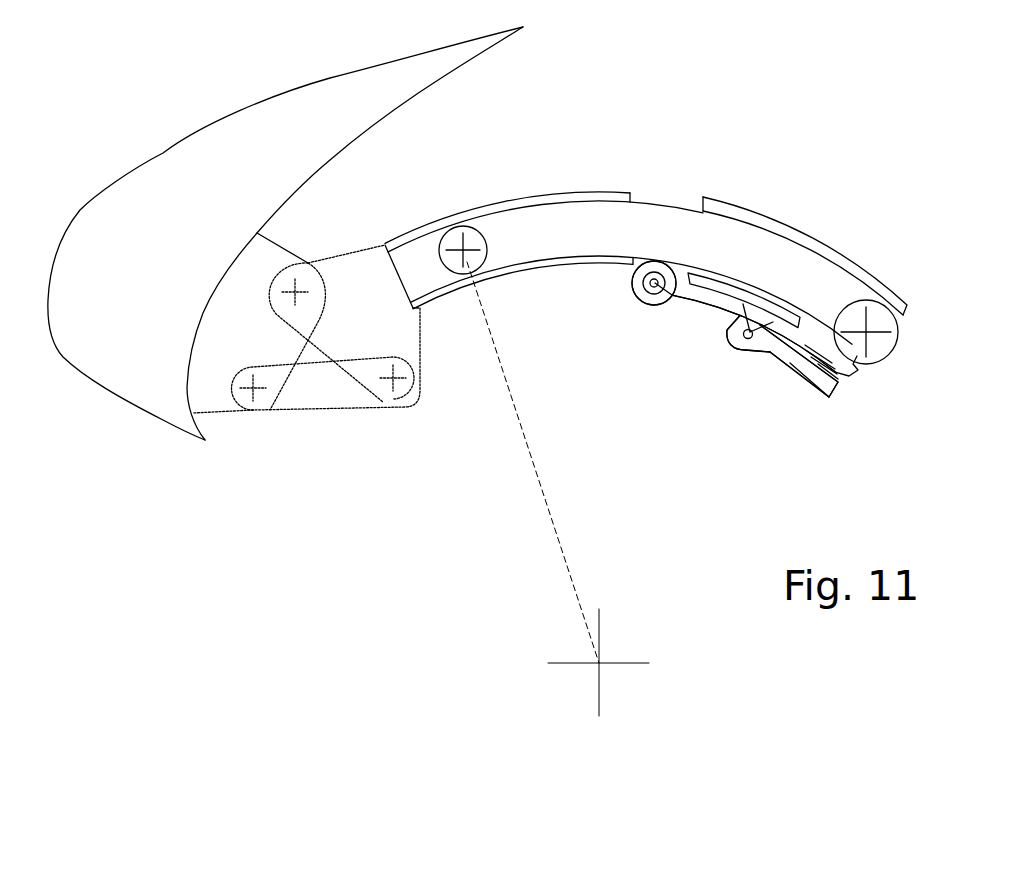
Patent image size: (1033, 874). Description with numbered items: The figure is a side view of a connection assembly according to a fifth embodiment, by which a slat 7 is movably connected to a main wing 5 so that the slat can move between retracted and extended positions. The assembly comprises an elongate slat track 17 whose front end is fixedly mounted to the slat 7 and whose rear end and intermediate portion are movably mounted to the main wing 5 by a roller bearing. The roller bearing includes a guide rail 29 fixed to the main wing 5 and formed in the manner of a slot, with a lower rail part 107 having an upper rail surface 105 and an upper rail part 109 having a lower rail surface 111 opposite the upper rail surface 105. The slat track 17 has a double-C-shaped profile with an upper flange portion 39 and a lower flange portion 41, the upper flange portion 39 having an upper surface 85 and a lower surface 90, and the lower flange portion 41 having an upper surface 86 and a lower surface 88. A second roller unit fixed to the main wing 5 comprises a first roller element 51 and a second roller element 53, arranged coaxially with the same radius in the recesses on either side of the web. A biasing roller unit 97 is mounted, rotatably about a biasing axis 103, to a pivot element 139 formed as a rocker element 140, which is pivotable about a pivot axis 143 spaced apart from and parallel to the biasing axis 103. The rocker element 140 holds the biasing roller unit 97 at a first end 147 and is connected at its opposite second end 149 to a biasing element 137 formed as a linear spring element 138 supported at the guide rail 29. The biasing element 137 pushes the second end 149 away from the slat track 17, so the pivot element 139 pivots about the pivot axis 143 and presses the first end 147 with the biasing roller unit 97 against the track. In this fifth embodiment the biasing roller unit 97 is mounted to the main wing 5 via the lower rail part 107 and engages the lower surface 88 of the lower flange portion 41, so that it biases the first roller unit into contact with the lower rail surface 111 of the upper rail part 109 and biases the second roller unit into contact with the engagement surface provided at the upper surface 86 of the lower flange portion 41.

The main wing 5 is at (624, 460).
The slat 7 is at (161, 274).
The slat track 17 is at (618, 240).
The guide rail 29 is at (791, 305).
The upper flange portion 39 is at (425, 228).
The lower flange portion 41 is at (443, 293).
The first roller element 51 is at (880, 317).
The second roller element 53 is at (478, 238).
The upper surface 85 is at (647, 203).
The upper surface 86 is at (533, 258).
The lower surface 88 is at (610, 263).
The lower surface 90 is at (507, 212).
The biasing roller unit 97 is at (648, 300).
The biasing axis 103 is at (655, 281).
The upper rail surface 105 is at (810, 320).
The lower rail part 107 is at (866, 402).
The upper rail part 109 is at (812, 233).
The lower rail surface 111 is at (778, 230).
The biasing element 137 is at (838, 386).
The linear spring element 138 is at (832, 463).
The pivot element 139 is at (713, 317).
The rocker element 140 is at (684, 393).
The pivot axis 143 is at (750, 342).
The first end 147 is at (669, 290).
The second end 149 is at (805, 372).